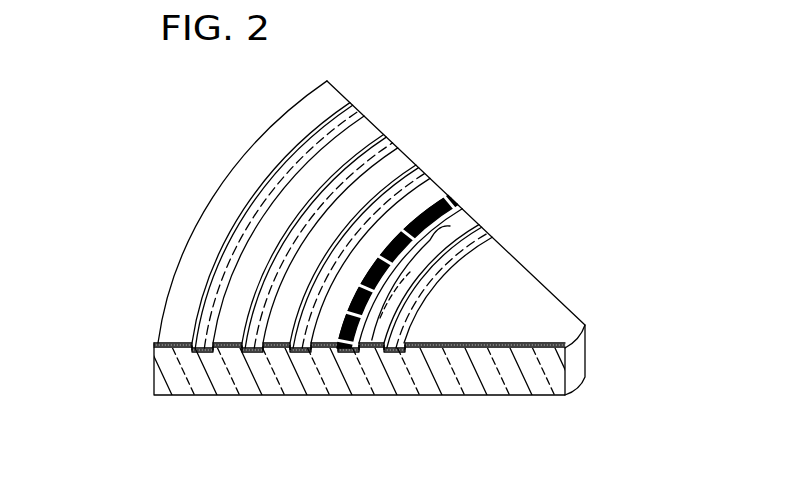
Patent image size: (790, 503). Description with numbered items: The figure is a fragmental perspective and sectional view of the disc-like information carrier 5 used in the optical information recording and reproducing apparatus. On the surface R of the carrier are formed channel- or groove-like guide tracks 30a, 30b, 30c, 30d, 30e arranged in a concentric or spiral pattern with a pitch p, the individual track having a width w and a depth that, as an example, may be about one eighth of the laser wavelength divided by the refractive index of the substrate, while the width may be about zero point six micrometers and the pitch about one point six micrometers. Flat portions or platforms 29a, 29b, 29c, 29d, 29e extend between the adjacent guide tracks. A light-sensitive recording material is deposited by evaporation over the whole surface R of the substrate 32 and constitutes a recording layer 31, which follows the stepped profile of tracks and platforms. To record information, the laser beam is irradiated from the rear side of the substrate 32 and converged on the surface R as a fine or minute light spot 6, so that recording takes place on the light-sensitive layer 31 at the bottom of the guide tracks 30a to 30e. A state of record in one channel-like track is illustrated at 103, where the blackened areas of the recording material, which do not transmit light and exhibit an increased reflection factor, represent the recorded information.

The information carrier 5 is at (276, 127).
The light spot 6 is at (203, 347).
The platform 29a is at (337, 91).
The platform 29b is at (374, 125).
The platform 29c is at (407, 156).
The platform 29d is at (439, 187).
The platform 29e is at (471, 216).
The guide track 30a is at (358, 109).
The guide track 30b is at (388, 140).
The guide track 30c is at (423, 171).
The guide track 30d is at (455, 202).
The guide track 30e is at (486, 231).
The state of record 103 is at (422, 242).
The recording layer 31 is at (441, 349).
The substrate 32 is at (489, 388).
The surface R is at (183, 273).
The width of guide track w is at (263, 448).
The pitch of guide tracks p is at (289, 396).